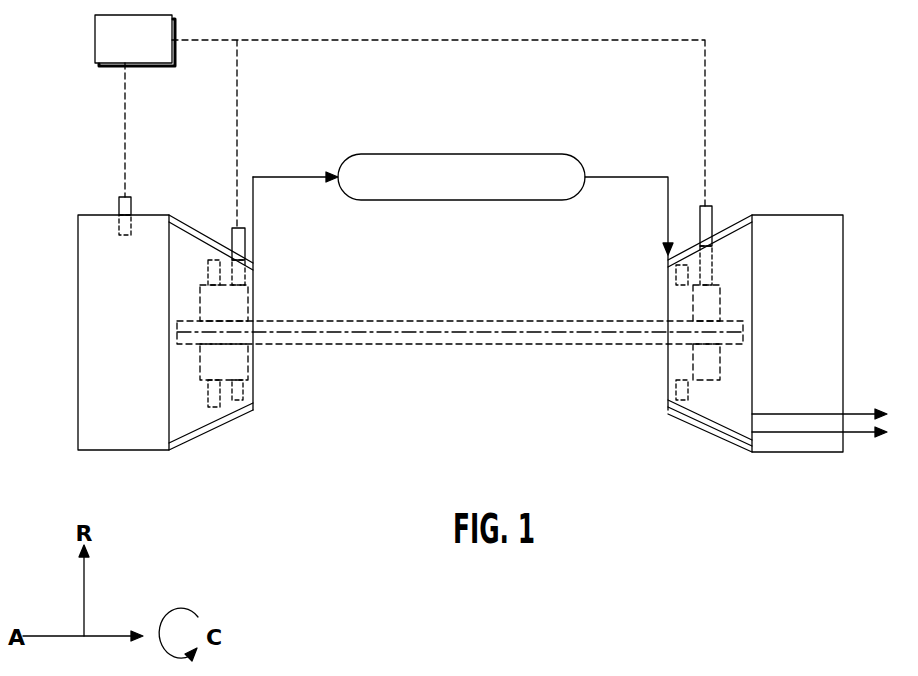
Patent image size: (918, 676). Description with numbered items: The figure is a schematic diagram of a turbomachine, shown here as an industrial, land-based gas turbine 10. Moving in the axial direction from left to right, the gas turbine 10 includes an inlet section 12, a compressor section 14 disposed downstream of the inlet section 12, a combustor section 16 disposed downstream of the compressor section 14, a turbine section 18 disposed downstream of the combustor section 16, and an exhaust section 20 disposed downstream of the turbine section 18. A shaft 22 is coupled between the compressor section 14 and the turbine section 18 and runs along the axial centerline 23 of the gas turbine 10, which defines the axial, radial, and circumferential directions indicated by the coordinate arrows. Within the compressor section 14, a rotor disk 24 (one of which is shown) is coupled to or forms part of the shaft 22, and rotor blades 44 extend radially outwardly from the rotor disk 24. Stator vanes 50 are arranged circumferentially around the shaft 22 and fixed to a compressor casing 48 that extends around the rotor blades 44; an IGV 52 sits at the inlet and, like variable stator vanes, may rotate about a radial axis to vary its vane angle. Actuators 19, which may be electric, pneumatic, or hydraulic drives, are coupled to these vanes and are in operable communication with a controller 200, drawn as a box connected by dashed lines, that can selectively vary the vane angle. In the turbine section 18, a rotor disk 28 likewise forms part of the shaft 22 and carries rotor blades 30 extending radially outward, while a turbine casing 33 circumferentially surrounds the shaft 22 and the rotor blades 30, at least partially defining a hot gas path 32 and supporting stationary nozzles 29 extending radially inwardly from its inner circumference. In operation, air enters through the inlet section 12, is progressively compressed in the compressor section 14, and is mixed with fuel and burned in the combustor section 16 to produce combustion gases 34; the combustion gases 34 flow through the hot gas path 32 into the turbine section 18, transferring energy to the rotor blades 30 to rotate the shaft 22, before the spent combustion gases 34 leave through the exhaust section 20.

The gas turbine 10 is at (320, 108).
The inlet section 12 is at (108, 213).
The compressor section 14 is at (200, 229).
The combustor section 16 is at (528, 153).
The turbine section 18 is at (738, 218).
The actuator 19 is at (131, 196).
The exhaust section 20 is at (808, 215).
The shaft 22 is at (400, 345).
The axial centerline 23 is at (493, 334).
The rotor disk 24 is at (200, 298).
The rotor disk 28 is at (668, 295).
The stationary nozzle 29 is at (715, 270).
The rotor blade 30 is at (676, 258).
The hot gas path 32 is at (727, 387).
The turbine casing 33 is at (679, 406).
The combustion gases 34 is at (635, 178).
The rotor blade 44 is at (205, 268).
The compressor casing 48 is at (194, 436).
The stator vane 50 is at (252, 279).
The IGV 52 is at (118, 228).
The controller 200 is at (116, 53).